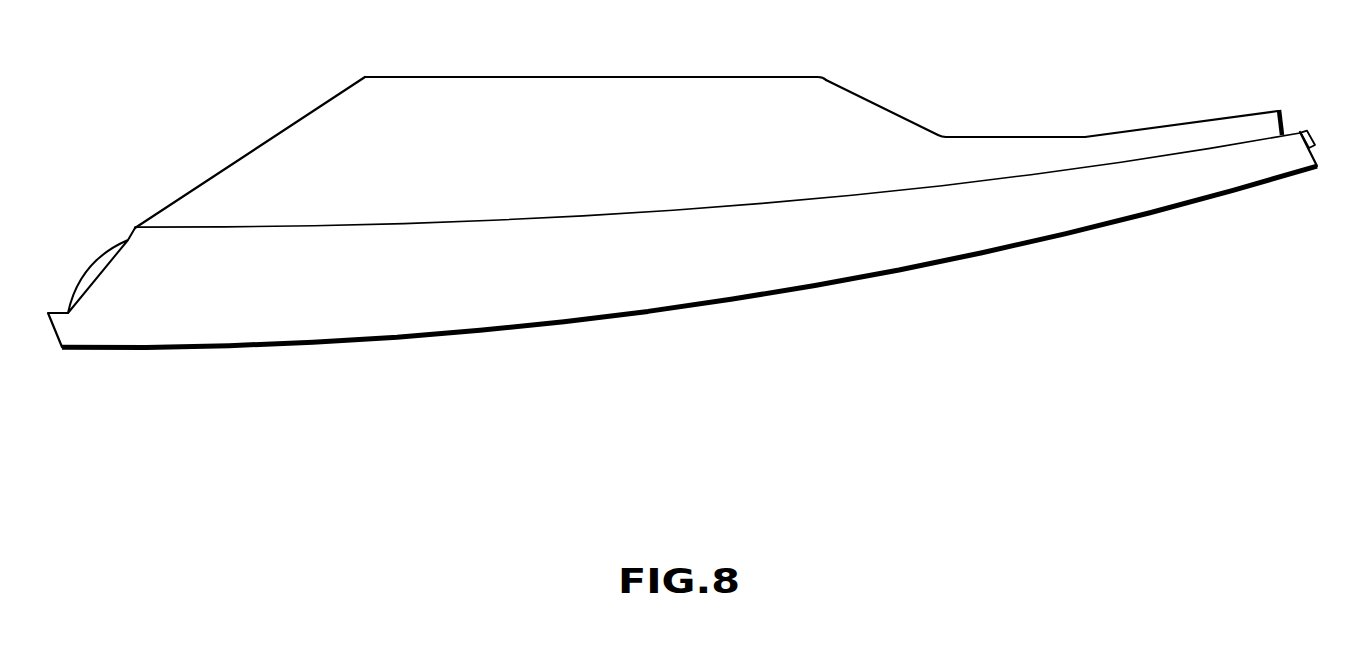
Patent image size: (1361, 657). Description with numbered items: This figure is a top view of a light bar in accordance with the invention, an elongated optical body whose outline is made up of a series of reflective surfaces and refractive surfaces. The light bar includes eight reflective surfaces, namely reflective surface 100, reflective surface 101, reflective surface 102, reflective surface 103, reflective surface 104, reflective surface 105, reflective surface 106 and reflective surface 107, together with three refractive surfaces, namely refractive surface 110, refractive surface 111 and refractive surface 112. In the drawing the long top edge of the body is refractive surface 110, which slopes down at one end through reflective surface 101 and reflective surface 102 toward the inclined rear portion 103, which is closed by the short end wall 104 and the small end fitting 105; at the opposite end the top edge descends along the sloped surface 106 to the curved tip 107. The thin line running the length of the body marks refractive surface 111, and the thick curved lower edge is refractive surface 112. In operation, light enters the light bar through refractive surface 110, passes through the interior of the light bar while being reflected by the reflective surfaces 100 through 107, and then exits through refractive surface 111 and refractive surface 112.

The reflective surface 100 is at (497, 112).
The reflective surface 101 is at (890, 105).
The reflective surface 102 is at (1028, 135).
The reflective surface 103 is at (1187, 118).
The reflective surface 104 is at (1283, 120).
The reflective surface 105 is at (1318, 155).
The reflective surface 106 is at (242, 150).
The reflective surface 107 is at (110, 253).
The refractive surface 110 is at (668, 75).
The refractive surface 111 is at (602, 285).
The refractive surface 112 is at (472, 335).